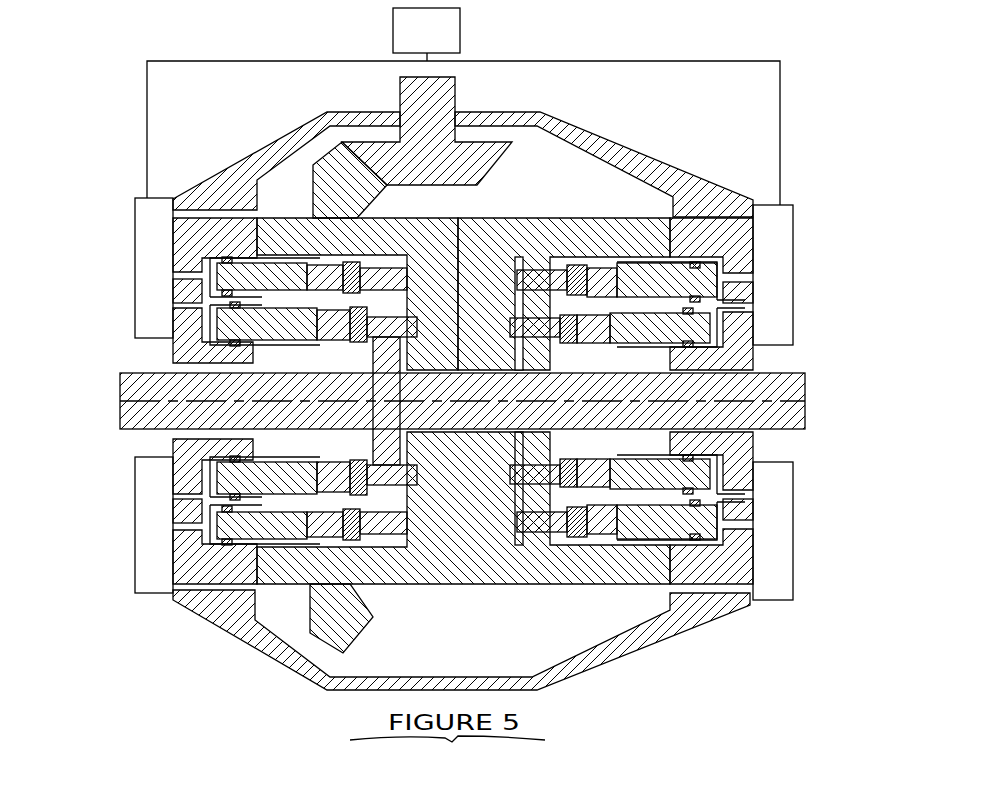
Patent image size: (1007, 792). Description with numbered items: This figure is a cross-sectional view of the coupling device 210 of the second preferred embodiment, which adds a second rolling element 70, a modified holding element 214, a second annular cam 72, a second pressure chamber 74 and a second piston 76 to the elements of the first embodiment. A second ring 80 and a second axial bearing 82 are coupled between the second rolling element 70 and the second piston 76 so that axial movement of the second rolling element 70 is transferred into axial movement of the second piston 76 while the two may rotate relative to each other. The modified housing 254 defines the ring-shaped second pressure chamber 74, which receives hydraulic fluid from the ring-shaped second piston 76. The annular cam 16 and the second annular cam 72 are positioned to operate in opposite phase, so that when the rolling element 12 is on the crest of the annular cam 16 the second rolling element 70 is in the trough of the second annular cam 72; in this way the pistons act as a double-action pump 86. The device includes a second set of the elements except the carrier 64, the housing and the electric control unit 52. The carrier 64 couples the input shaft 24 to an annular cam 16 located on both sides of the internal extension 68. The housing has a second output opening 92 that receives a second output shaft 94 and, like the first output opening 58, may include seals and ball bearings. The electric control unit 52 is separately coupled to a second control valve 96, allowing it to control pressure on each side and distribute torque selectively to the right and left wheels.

The electric control unit 52 is at (393, 40).
The input shaft 24 is at (457, 77).
The coupling device 210 is at (648, 103).
The second ring 80 is at (590, 318).
The second axial bearing 82 is at (640, 232).
The rolling element 12 is at (545, 295).
The annular cam 16 is at (220, 320).
The second annular cam 72 is at (448, 305).
The second control valve 96 is at (150, 252).
The second output opening 92 is at (193, 373).
The second output shaft 94 is at (330, 397).
The internal extension 68 is at (345, 437).
The double-action pump 86 is at (802, 236).
The second piston 76 is at (740, 271).
The second pressure chamber 74 is at (740, 316).
The second rolling element 70 is at (553, 340).
The first output opening 58 is at (700, 430).
The modified holding element 214 is at (550, 452).
The carrier 64 is at (443, 573).
The modified housing 254 is at (670, 607).